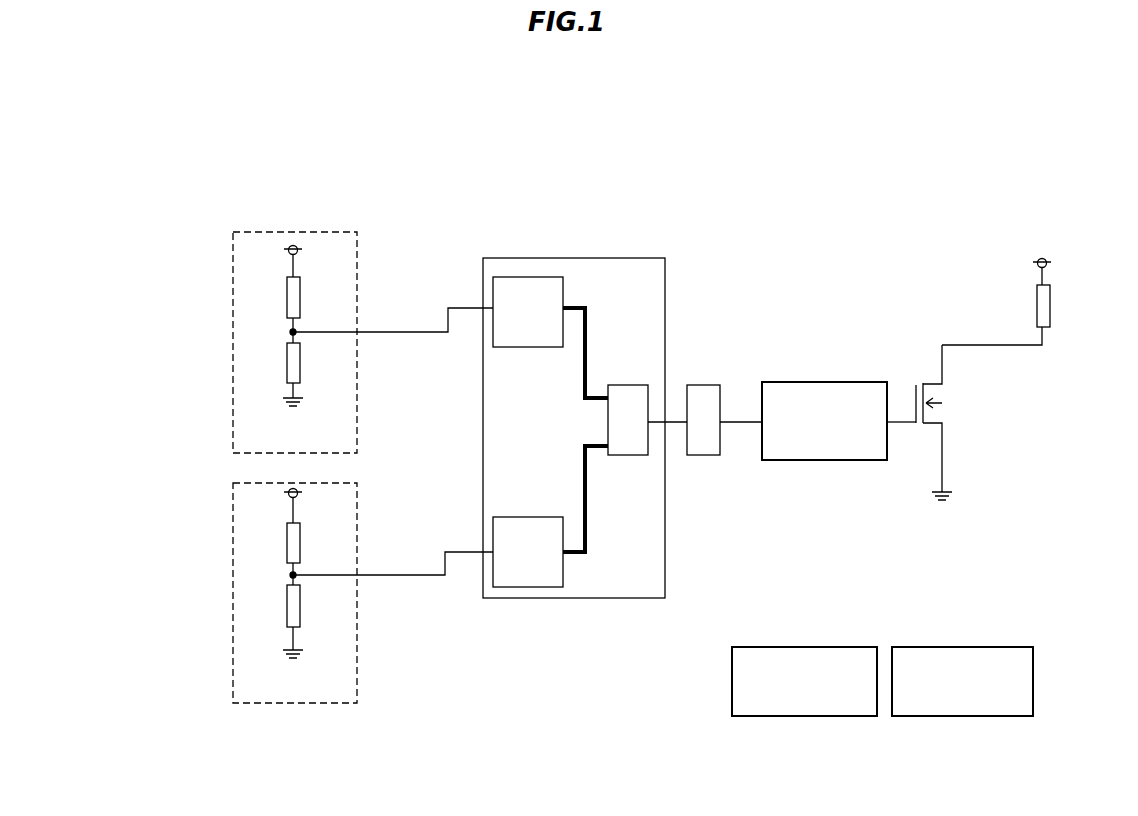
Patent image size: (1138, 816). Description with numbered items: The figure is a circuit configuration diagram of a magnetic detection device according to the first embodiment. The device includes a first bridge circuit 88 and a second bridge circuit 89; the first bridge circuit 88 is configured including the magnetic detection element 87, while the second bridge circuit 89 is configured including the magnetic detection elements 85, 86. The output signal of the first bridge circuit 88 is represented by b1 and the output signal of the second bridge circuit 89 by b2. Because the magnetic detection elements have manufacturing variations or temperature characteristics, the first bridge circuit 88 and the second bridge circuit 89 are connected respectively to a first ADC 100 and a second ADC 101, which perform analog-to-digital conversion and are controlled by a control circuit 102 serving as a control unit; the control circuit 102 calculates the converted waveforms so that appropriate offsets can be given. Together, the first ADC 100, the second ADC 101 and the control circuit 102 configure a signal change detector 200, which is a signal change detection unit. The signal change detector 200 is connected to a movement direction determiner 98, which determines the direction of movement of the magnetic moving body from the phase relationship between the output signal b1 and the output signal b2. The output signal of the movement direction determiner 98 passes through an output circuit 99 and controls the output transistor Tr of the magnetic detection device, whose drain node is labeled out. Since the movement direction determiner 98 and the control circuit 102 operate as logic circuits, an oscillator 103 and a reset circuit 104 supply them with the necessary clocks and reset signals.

The first bridge circuit 88 is at (298, 232).
The magnetic detection element 87 is at (287, 352).
The magnetic detection element 85 is at (287, 530).
The magnetic detection element 86 is at (287, 598).
The second bridge circuit 89 is at (297, 703).
The output signal of the first bridge circuit b1 is at (392, 332).
The output signal of the second bridge circuit b2 is at (400, 575).
The signal change detector 200 is at (567, 258).
The first analog digital conversion unit (first ADC) 100 is at (520, 277).
The second analog digital conversion unit (second ADC) 101 is at (533, 587).
The control circuit 102 is at (633, 385).
The movement direction determiner 98 is at (710, 385).
The output circuit 99 is at (825, 382).
The oscillator 103 is at (807, 647).
The reset circuit 104 is at (942, 647).
The output transistor Tr is at (950, 385).
The output terminal out is at (1017, 345).